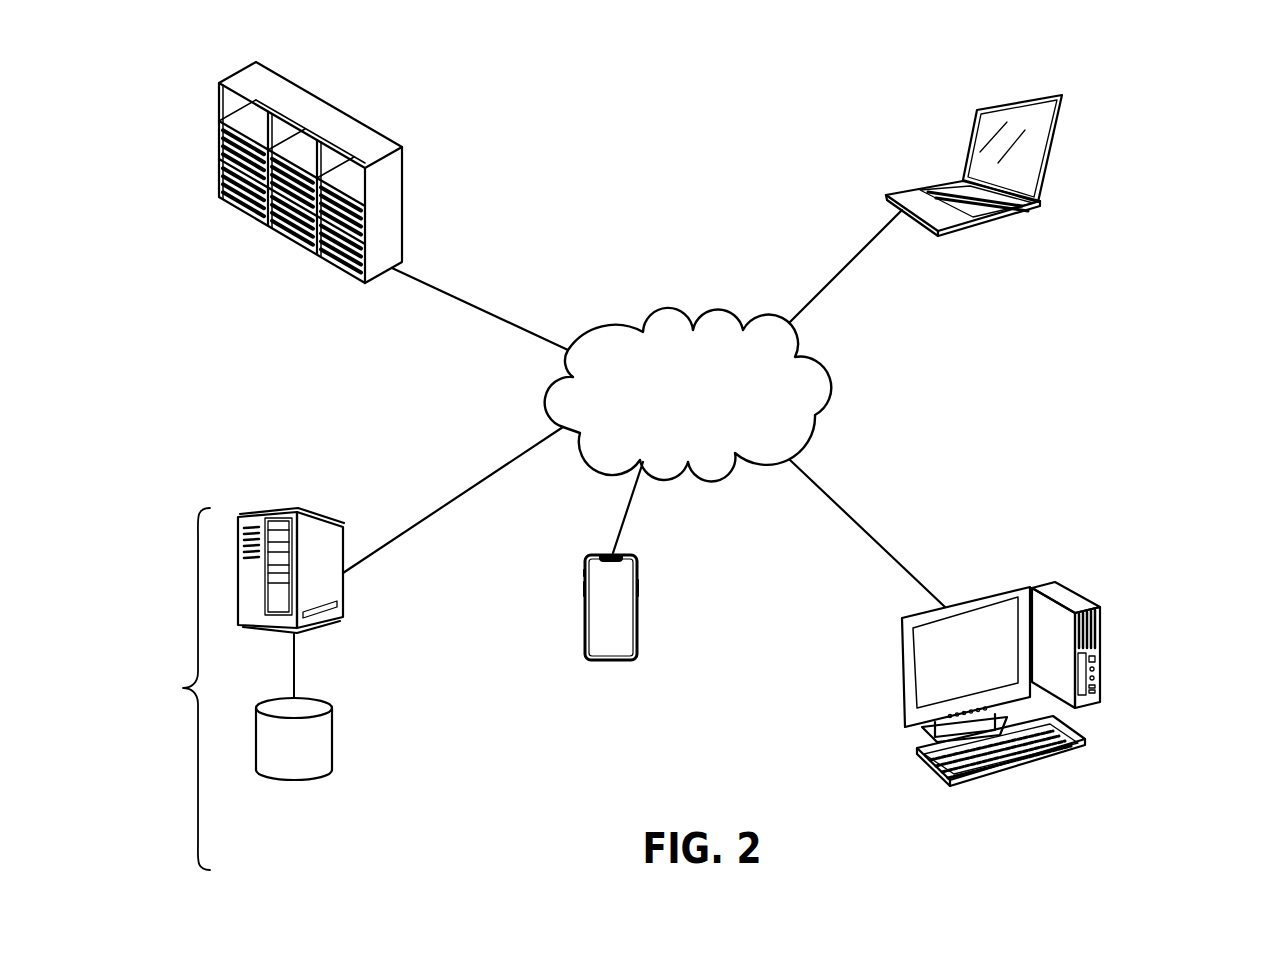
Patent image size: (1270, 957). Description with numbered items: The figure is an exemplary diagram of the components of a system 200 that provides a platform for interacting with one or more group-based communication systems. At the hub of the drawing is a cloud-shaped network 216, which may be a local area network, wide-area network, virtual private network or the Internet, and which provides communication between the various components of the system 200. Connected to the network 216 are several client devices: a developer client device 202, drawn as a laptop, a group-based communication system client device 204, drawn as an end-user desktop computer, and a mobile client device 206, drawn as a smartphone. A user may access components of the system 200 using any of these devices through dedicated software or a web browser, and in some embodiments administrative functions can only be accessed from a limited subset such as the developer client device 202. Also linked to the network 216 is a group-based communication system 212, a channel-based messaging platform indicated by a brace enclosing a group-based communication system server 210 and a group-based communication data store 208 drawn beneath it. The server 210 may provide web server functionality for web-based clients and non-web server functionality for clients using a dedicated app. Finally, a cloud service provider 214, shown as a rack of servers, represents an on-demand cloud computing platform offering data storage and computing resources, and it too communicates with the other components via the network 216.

The system 200 is at (1152, 88).
The developer client device 202 is at (1052, 165).
The group-based communication system client device 204 is at (1100, 643).
The mobile client device 206 is at (610, 662).
The group-based communication data store 208 is at (333, 732).
The group-based communication system server 210 is at (320, 519).
The group-based communication system 212 is at (294, 666).
The cloud service provider 214 is at (337, 110).
The network 216 is at (813, 353).